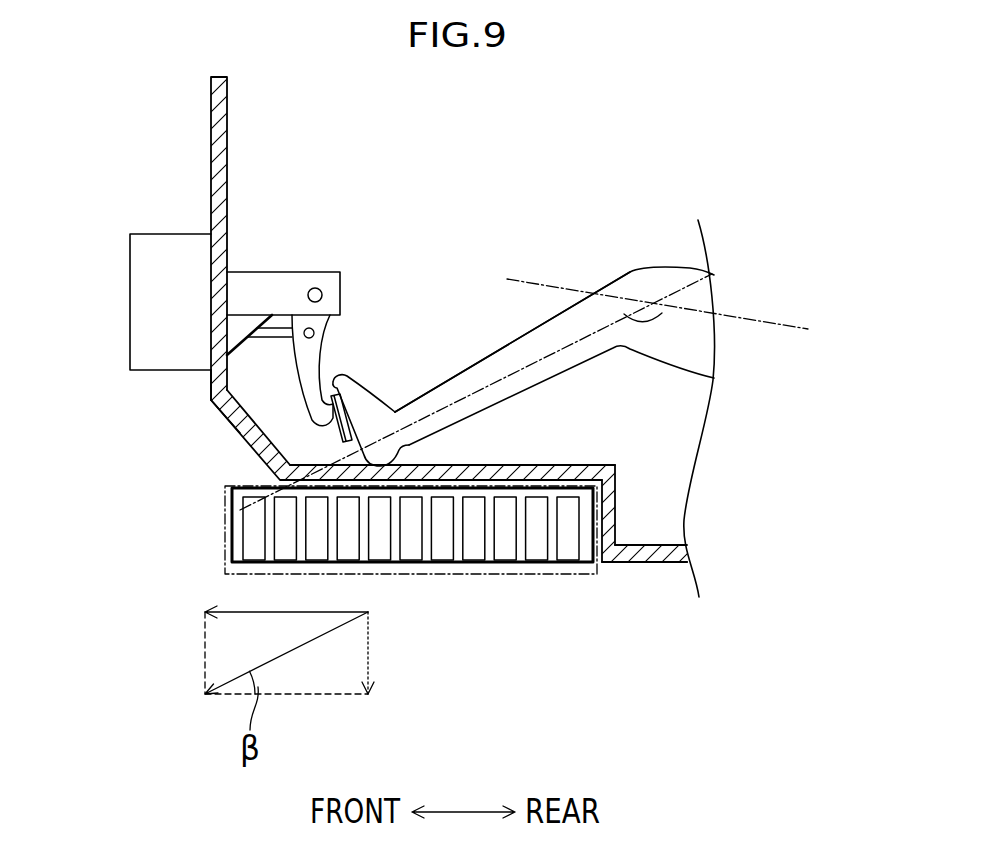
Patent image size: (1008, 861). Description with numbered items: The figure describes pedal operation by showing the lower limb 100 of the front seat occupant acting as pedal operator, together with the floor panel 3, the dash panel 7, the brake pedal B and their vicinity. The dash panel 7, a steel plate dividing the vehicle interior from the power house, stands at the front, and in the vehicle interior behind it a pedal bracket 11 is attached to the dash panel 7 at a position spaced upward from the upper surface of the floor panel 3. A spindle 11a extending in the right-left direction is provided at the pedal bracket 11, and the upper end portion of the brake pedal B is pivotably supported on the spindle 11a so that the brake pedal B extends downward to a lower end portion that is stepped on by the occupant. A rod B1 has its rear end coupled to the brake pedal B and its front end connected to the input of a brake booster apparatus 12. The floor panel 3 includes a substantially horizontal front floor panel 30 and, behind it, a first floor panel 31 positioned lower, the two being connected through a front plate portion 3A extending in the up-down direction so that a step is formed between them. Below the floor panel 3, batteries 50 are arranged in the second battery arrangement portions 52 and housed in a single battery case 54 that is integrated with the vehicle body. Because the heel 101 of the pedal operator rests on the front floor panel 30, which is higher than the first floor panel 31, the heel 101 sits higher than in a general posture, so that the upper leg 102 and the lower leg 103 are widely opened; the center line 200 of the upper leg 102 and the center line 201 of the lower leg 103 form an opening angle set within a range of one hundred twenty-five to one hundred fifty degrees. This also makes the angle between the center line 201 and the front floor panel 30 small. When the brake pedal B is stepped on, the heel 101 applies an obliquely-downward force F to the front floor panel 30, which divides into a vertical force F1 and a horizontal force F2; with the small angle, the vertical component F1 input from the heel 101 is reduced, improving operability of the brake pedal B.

The dash panel 7 is at (211, 117).
The pedal bracket 11 is at (283, 272).
The spindle 11a is at (322, 295).
The brake booster apparatus 12 is at (130, 343).
The brake pedal B is at (263, 438).
The rod B1 is at (212, 401).
The front floor panel 30 is at (523, 463).
The floor panel 3 is at (634, 575).
The front plate portion 3A is at (616, 513).
The first floor panel 31 is at (668, 562).
The batteries 50 is at (578, 540).
The second battery arrangement portions 52 is at (468, 574).
The battery case 54 is at (527, 579).
The lower limb 100 is at (639, 254).
The heel 101 is at (386, 458).
The upper leg 102 is at (703, 290).
The lower leg 103 is at (502, 362).
The center line of the upper leg 200 is at (688, 310).
The center line of the lower leg 201 is at (442, 403).
The force F is at (297, 647).
The vertical force F1 is at (368, 643).
The horizontal force F2 is at (260, 612).